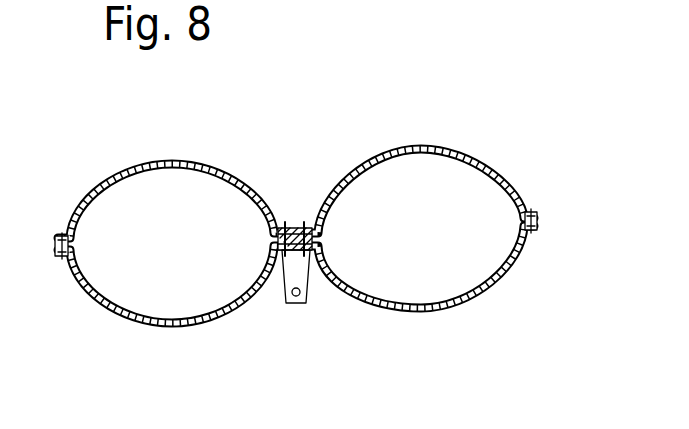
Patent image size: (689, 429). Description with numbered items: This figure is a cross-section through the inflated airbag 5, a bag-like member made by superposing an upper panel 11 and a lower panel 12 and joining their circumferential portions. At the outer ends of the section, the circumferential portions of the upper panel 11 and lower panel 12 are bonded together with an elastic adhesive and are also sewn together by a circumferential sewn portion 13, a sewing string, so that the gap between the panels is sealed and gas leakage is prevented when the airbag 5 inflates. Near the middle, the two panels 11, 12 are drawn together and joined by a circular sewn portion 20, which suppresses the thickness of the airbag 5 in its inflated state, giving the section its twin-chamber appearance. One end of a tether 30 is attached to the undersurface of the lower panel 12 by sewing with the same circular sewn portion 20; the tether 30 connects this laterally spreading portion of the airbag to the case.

The airbag 5 is at (316, 224).
The upper panel 11 is at (414, 146).
The lower panel 12 is at (418, 312).
The circumferential sewn portion 13 is at (66, 263).
The circular sewn portion 20 is at (291, 226).
The tether 30 is at (285, 305).